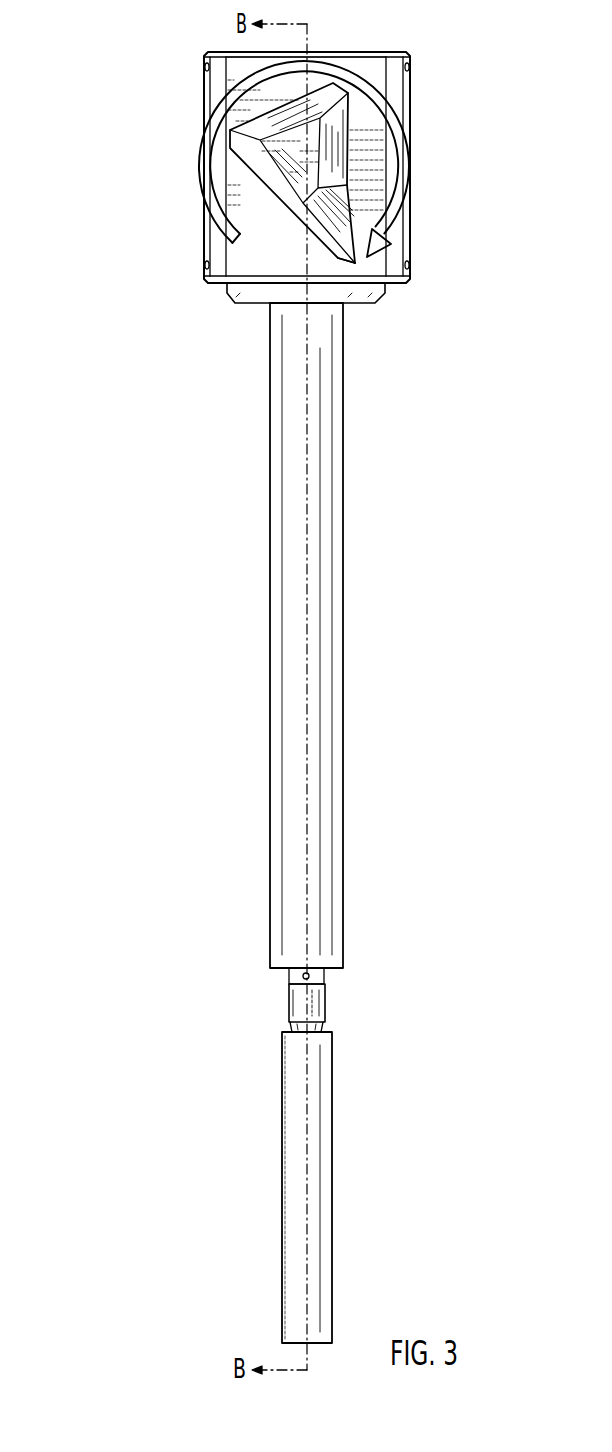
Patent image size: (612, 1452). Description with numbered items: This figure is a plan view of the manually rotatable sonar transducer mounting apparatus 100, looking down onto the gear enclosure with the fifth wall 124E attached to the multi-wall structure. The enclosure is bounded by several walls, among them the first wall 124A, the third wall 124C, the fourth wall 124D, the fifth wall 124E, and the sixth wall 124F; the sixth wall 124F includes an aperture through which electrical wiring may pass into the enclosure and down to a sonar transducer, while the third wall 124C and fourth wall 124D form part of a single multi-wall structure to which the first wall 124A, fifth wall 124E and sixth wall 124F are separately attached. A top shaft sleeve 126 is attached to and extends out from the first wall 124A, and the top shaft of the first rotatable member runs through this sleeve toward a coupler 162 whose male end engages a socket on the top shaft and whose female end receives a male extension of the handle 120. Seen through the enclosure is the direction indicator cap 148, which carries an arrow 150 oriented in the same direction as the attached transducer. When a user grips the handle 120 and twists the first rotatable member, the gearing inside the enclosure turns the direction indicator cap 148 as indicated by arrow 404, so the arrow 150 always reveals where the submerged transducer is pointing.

The manually rotatable sonar transducer mounting apparatus 100 is at (107, 144).
The handle 120 is at (332, 1083).
The first wall 124A is at (383, 278).
The third wall 124C is at (245, 53).
The fourth wall 124D is at (377, 68).
The fifth wall 124E is at (205, 83).
The sixth wall 124F is at (407, 103).
The top shaft sleeve 126 is at (333, 632).
The direction indicator cap 148 is at (288, 157).
The arrow 150 is at (356, 262).
The coupler 162 is at (327, 1007).
The arrow 404 is at (413, 167).